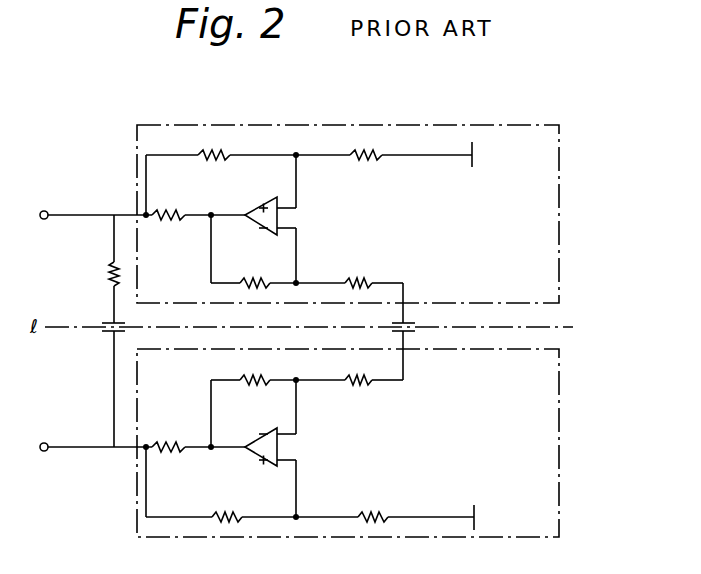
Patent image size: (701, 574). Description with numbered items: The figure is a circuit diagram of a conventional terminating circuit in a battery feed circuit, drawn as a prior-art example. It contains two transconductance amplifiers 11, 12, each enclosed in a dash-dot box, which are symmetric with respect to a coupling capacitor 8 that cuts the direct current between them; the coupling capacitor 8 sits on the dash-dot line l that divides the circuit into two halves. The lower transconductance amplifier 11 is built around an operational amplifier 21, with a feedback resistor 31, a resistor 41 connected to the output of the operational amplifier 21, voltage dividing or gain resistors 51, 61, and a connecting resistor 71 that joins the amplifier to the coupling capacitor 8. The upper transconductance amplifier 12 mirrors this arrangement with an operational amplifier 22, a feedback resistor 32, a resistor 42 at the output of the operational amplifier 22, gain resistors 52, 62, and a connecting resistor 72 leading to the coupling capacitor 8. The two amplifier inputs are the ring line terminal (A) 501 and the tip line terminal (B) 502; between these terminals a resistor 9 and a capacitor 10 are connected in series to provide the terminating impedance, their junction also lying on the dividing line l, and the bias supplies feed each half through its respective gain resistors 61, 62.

The transconductance amplifier 12 is at (303, 202).
The transconductance amplifier 11 is at (324, 428).
The tip line terminal (B) 502 is at (41, 191).
The ring line terminal (A) 501 is at (42, 457).
The resistor 9 is at (86, 268).
The capacitor 10 is at (84, 334).
The capacitor 8 is at (408, 340).
The resistor 42 is at (170, 229).
The resistor 41 is at (168, 460).
The voltage dividing resistor 52 is at (201, 156).
The voltage dividing resistor 51 is at (221, 492).
The operational amplifier 22 is at (261, 202).
The operational amplifier 21 is at (261, 433).
The feedback resistor 32 is at (252, 260).
The feedback resistor 31 is at (227, 368).
The voltage dividing resistor 62 is at (370, 169).
The voltage dividing resistor 61 is at (370, 491).
The resistor 72 is at (384, 267).
The resistor 71 is at (374, 389).